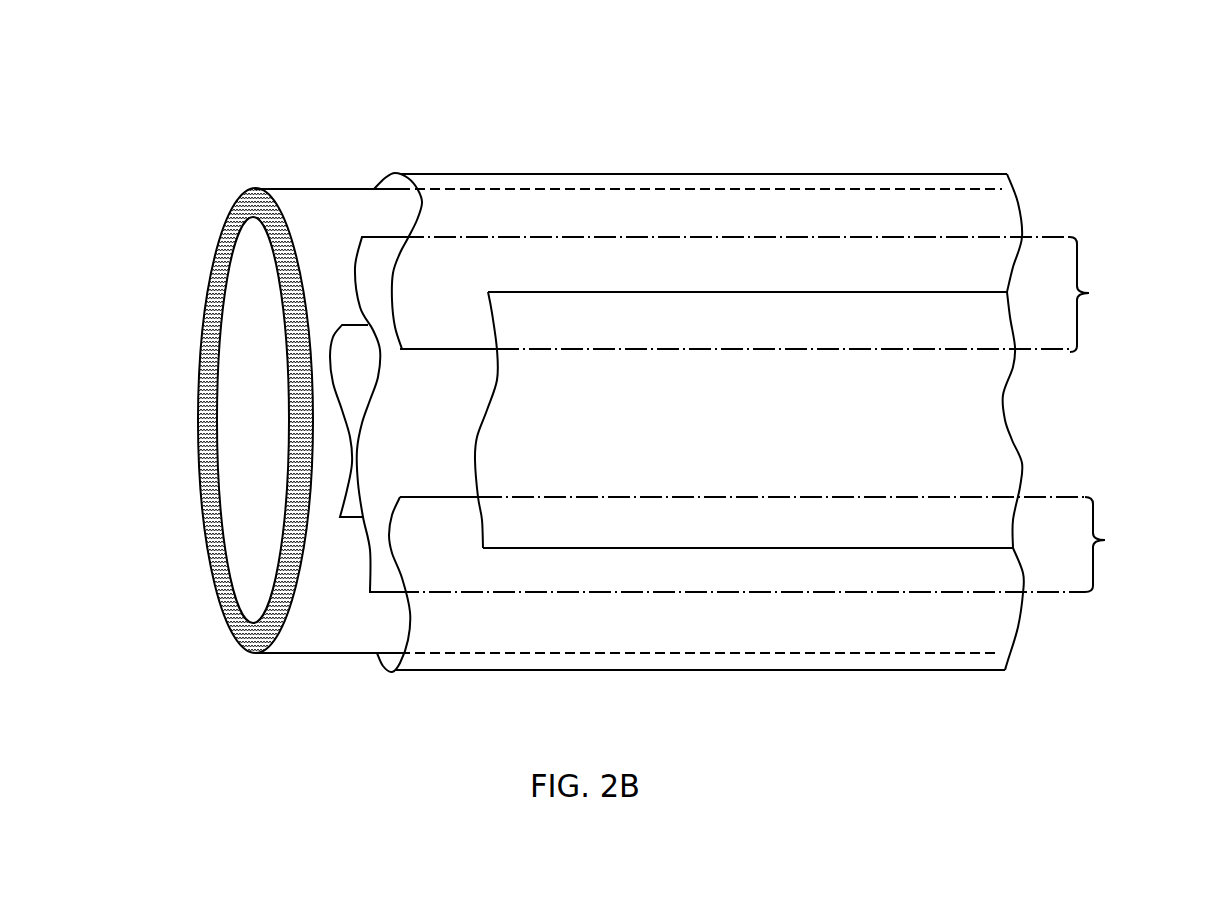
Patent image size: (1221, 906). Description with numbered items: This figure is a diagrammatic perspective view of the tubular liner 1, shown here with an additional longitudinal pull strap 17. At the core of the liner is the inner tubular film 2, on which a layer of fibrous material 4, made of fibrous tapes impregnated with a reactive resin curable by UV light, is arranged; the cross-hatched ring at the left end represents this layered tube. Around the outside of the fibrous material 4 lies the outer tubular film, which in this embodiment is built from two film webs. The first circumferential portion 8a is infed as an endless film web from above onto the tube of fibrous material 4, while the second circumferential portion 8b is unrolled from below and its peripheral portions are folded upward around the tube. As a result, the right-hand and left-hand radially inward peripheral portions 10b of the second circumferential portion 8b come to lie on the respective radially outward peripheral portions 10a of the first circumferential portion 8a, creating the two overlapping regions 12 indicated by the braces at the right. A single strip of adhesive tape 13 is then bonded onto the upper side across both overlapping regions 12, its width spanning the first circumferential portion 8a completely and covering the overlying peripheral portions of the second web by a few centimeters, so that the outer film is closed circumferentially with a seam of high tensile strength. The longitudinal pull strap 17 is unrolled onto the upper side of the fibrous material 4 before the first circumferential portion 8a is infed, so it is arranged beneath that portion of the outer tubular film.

The tubular liner 1 is at (237, 160).
The inner tubular film 2 is at (240, 487).
The layer of fibrous material 4 is at (257, 638).
The first circumferential portion 8a is at (423, 432).
The second circumferential portion 8b is at (540, 255).
The radially outward peripheral portion 10a is at (468, 325).
The radially inward peripheral portion 10b is at (373, 268).
The overlapping region 12 is at (1090, 268).
The adhesive tape 13 is at (970, 441).
The longitudinal pull strap 17 is at (347, 382).